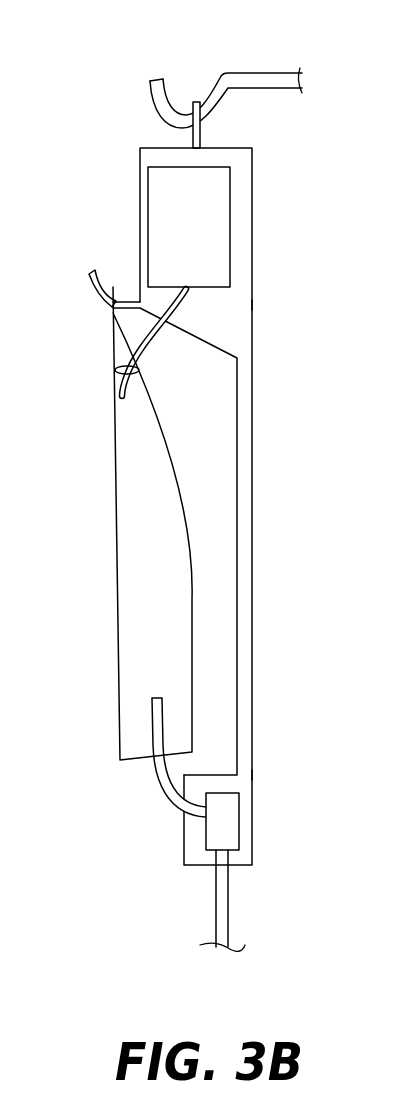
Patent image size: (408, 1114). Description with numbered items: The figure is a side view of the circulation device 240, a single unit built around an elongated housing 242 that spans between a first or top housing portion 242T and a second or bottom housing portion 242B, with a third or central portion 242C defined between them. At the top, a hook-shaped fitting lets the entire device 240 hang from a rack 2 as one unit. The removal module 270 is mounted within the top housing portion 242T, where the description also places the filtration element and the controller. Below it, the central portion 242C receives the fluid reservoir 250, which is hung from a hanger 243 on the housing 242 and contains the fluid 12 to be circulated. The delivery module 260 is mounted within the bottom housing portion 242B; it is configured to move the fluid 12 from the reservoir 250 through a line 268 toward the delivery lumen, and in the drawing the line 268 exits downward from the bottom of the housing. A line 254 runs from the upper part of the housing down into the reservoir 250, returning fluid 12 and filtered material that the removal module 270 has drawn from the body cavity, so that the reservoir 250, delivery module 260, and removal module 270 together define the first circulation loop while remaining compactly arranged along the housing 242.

The circulation device 240 is at (86, 108).
The rack 2 is at (270, 73).
The elongated housing 242 is at (254, 688).
The top housing portion 242T is at (254, 192).
The central housing portion 242C is at (254, 488).
The bottom housing portion 242B is at (245, 850).
The removal module 270 is at (160, 212).
The hanger 243 is at (95, 268).
The line 254 is at (145, 340).
The fluid 12 is at (128, 502).
The fluid reservoir 250 is at (157, 601).
The delivery module 260 is at (213, 837).
The line 268 is at (216, 934).